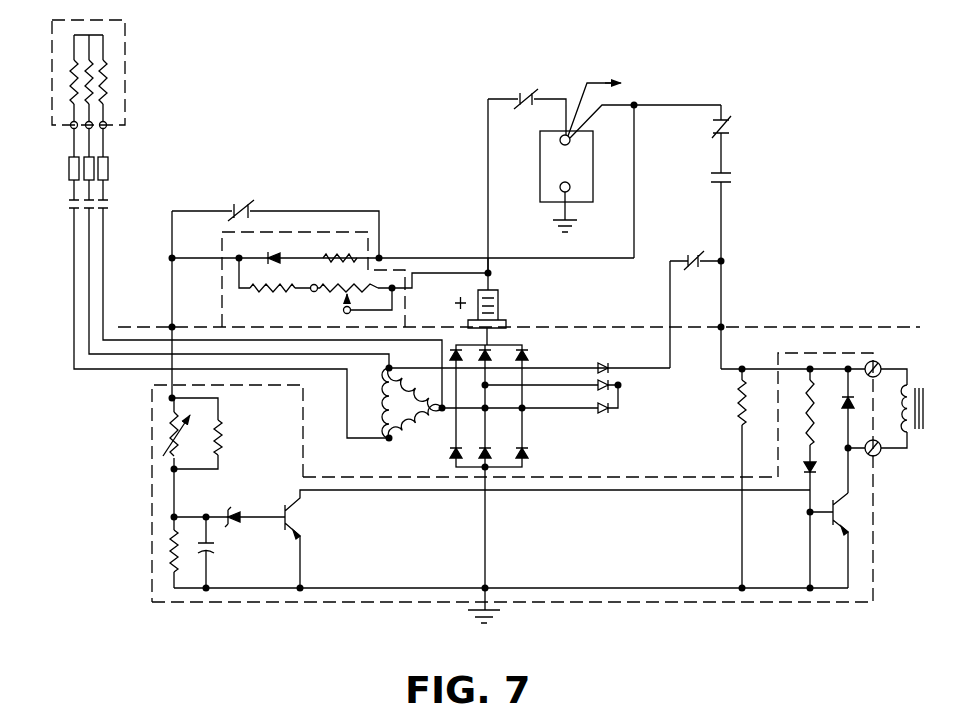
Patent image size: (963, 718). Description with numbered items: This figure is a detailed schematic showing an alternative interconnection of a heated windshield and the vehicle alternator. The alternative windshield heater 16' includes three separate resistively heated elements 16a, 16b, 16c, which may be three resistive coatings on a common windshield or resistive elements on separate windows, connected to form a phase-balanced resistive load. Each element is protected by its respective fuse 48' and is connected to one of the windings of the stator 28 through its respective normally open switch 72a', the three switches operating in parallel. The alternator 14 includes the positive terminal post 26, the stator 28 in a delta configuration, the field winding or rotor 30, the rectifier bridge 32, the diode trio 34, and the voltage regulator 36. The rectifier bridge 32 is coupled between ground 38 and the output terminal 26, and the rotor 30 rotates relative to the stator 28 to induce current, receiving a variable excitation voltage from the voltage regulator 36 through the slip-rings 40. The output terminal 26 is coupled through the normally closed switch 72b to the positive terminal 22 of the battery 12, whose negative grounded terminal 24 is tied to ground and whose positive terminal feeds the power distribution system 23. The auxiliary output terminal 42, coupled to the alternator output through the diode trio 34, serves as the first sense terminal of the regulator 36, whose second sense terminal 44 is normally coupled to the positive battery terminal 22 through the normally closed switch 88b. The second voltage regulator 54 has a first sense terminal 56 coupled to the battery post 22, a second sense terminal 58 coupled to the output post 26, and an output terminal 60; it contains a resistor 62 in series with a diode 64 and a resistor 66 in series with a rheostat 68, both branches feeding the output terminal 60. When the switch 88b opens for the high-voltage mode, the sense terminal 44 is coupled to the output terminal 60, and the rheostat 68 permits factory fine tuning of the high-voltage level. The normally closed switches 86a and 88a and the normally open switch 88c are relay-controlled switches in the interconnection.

The windshield heater 16' is at (120, 64).
The resistively heated element 16a is at (98, 62).
The resistively heated element 16b is at (102, 81).
The resistively heated element 16c is at (104, 97).
The fuse 48' is at (118, 167).
The normally open switch 72a' is at (125, 196).
The second voltage regulator 54 is at (217, 240).
The normally closed switch 88b is at (243, 203).
The output terminal 60 is at (221, 268).
The diode 64 is at (278, 252).
The resistor 62 is at (338, 254).
The first sense terminal 56 is at (381, 256).
The resistor 66 is at (276, 292).
The rheostat 68 is at (334, 292).
The second sense terminal 58 is at (396, 292).
The second sense terminal 44 is at (170, 325).
The normally closed switch 72b is at (535, 96).
The battery 12 is at (539, 167).
The positive terminal 22 is at (560, 141).
The negative grounded terminal 24 is at (561, 193).
The power distribution system 23 is at (726, 77).
The normally closed switch 86a is at (732, 125).
The normally open switch 88c is at (733, 175).
The normally closed switch 88a is at (698, 256).
The positive terminal post 26 is at (500, 303).
The auxiliary output terminal 42 is at (724, 326).
The stator 28 is at (385, 442).
The rectifier bridge 32 is at (538, 432).
The diode trio 34 is at (607, 424).
The slip-rings 40 is at (880, 364).
The field winding 30 is at (921, 449).
The alternator 14 is at (103, 507).
The voltage regulator 36 is at (693, 606).
The ground 38 is at (473, 618).